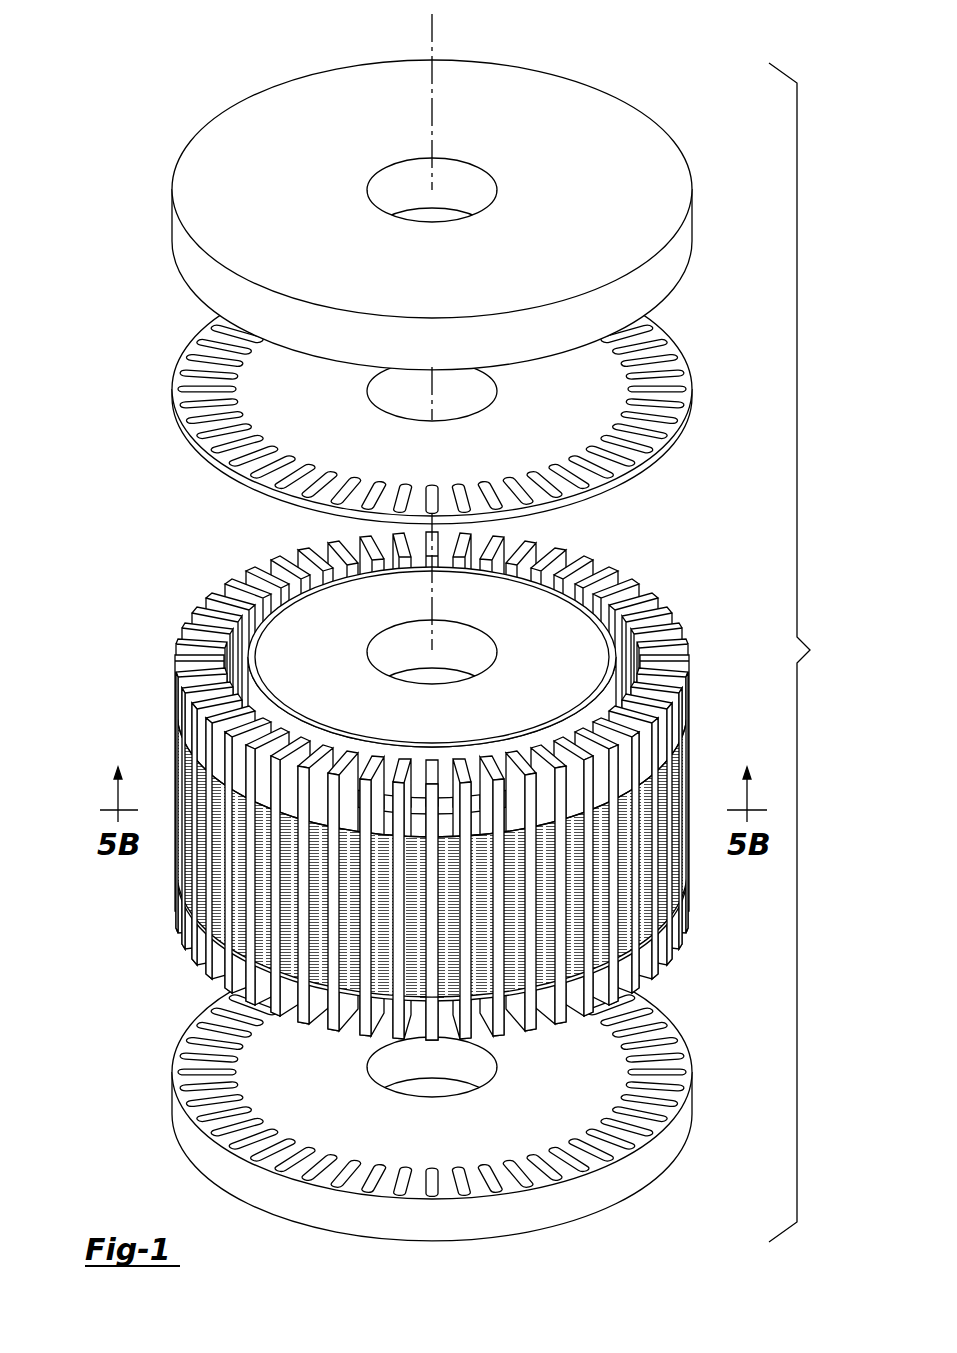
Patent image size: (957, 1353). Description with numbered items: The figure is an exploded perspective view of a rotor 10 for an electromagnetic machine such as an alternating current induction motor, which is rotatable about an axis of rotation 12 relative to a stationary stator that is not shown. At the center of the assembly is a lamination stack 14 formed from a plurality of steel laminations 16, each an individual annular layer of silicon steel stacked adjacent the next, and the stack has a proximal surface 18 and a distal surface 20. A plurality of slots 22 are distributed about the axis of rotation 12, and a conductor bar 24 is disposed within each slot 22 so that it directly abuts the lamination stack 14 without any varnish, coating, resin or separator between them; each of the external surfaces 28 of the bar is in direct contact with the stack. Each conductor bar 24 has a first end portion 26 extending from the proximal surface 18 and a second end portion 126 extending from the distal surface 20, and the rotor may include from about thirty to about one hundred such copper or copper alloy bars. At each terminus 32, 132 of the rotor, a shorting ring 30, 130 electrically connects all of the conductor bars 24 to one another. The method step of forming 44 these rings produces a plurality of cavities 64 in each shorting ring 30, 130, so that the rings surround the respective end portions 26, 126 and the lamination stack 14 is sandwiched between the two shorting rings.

The rotor 10 is at (508, 627).
The axis of rotation 12 is at (434, 103).
The lamination stack 14 is at (363, 978).
The steel laminations 16 is at (692, 378).
The proximal surface 18 is at (688, 710).
The distal surface 20 is at (432, 868).
The slot 22 is at (432, 993).
The conductor bar 24 is at (513, 1025).
The first end portion 26 is at (571, 747).
The external surfaces 28 is at (653, 740).
The shorting ring 30 is at (693, 218).
The terminus 32 is at (468, 806).
The forming 44 is at (472, 627).
The cavities 64 is at (305, 1160).
The second end portion 126 is at (322, 1027).
The shorting ring 130 is at (472, 1093).
The terminus 132 is at (707, 937).